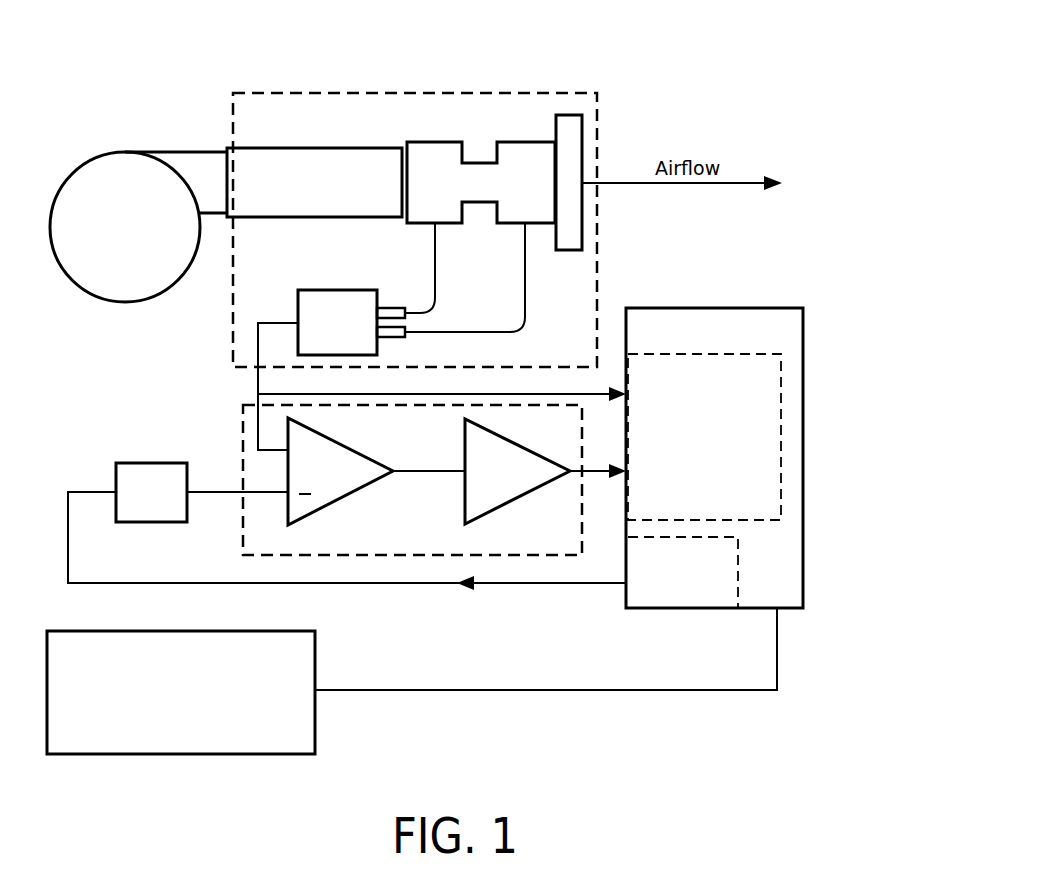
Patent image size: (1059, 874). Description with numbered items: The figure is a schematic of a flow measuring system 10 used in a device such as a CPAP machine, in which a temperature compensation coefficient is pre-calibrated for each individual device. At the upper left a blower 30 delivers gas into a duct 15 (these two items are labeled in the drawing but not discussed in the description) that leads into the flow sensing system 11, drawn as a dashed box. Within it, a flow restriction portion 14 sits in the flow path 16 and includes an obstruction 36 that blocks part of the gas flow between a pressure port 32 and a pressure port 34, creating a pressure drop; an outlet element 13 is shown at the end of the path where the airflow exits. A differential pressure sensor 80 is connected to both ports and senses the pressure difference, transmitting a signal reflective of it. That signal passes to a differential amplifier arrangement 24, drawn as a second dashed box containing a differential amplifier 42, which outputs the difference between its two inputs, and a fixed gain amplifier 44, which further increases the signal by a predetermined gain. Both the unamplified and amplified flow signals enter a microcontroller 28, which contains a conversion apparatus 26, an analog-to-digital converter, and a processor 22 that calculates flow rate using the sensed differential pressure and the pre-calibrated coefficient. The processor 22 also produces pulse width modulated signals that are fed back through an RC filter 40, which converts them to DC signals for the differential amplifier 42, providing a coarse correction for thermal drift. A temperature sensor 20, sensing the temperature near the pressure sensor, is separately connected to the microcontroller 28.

The flow measuring system 10 is at (803, 72).
The flow sensing system 11 is at (289, 90).
The outlet flap 13 is at (573, 142).
The flow restriction portion 14 is at (540, 136).
The duct 15 is at (326, 189).
The flow path 16 is at (535, 189).
The temperature sensor 20 is at (315, 658).
The processor 22 is at (738, 548).
The differential amplifier arrangement 24 is at (242, 409).
The conversion apparatus 26 is at (781, 422).
The microcontroller 28 is at (808, 313).
The blower 30 is at (136, 234).
The pressure port 32 is at (447, 215).
The pressure port 34 is at (538, 215).
The obstruction 36 is at (478, 203).
The RC filter 40 is at (187, 475).
The differential amplifier 42 is at (355, 500).
The fixed gain amplifier 44 is at (528, 490).
The differential pressure sensor 80 is at (349, 333).